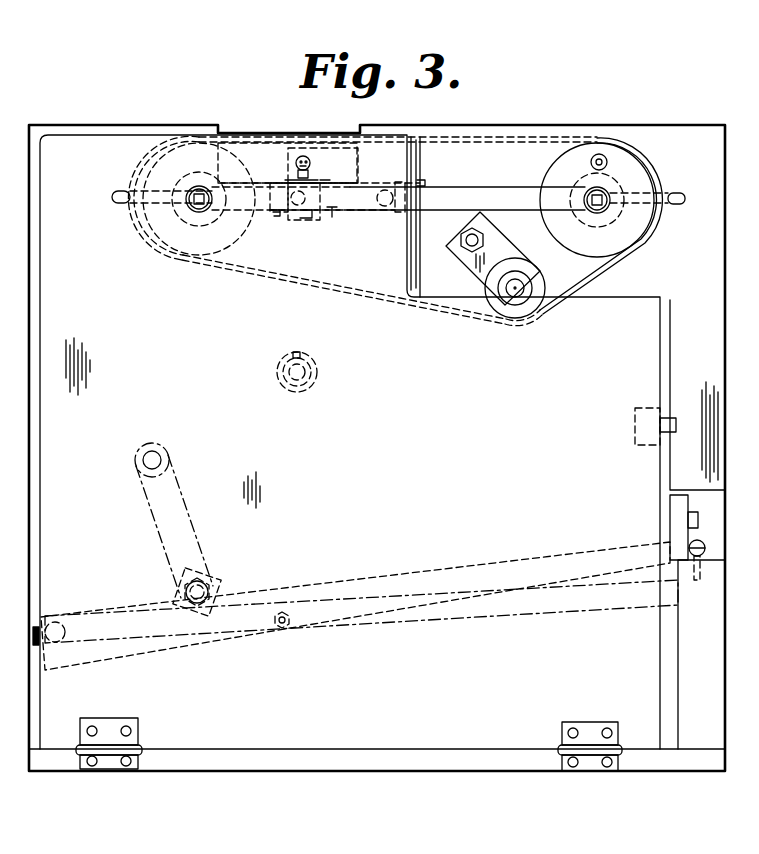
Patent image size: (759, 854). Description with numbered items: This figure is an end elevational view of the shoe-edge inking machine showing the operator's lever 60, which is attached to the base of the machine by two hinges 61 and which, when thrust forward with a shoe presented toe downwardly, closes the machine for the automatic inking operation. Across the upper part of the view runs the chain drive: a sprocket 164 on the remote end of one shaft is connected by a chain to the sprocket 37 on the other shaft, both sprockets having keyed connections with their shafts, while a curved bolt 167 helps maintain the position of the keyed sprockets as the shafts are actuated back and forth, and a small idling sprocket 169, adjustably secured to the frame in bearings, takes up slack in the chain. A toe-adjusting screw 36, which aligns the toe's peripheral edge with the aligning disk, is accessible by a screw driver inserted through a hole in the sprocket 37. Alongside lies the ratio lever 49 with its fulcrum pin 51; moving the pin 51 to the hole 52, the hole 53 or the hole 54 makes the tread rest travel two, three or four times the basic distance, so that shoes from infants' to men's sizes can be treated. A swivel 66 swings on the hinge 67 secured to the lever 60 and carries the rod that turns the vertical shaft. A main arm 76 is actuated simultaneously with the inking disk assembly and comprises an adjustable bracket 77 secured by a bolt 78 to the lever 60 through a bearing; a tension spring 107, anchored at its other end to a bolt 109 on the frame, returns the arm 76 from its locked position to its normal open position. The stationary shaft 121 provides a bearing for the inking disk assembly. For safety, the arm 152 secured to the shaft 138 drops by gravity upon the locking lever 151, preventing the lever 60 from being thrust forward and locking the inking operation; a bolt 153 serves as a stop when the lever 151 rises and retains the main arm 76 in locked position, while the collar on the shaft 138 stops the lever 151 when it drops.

The toe-adjusting screw 36 is at (602, 158).
The sprocket 37 is at (634, 170).
The ratio lever 49 is at (470, 200).
The fulcrum pin 51 is at (398, 214).
The hole 52 is at (334, 216).
The hole 53 is at (308, 220).
The hole 54 is at (278, 215).
The operator's lever 60 is at (46, 342).
The hinges 61 is at (118, 732).
The swivel 66 is at (318, 169).
The hinge 67 is at (300, 183).
The main arm 76 is at (690, 506).
The adjustable bracket 77 is at (672, 472).
The bolt 78 is at (672, 426).
The tension spring 107 is at (698, 520).
The bolt 109 is at (702, 546).
The shaft 121 is at (306, 365).
The shaft 138 is at (218, 590).
The locking lever 151 is at (468, 580).
The arm 152 is at (170, 533).
The bolt 153 is at (555, 553).
The sprocket 164 is at (163, 163).
The curved bolt 167 is at (134, 200).
The idling sprocket 169 is at (540, 276).